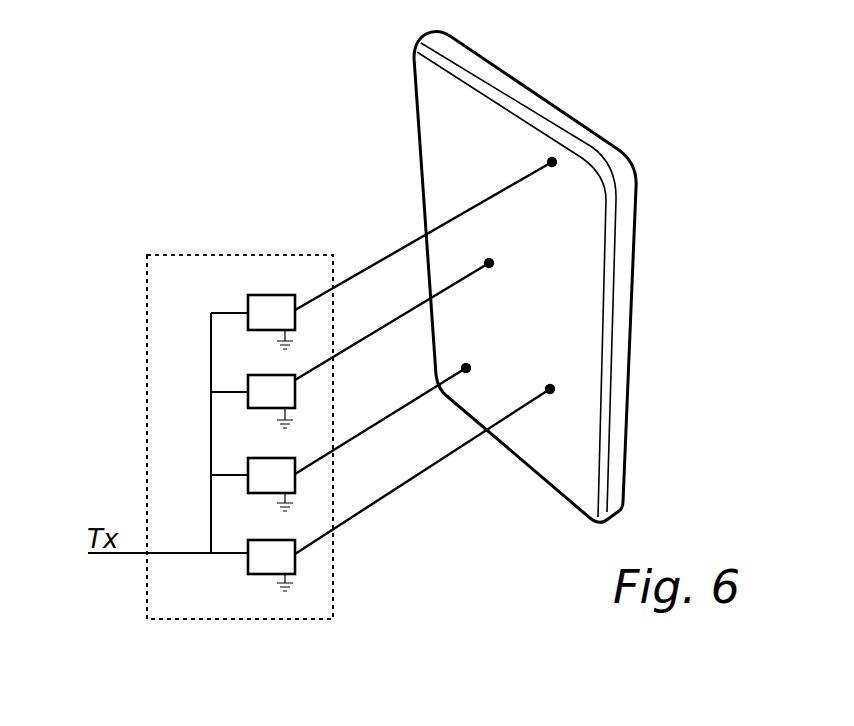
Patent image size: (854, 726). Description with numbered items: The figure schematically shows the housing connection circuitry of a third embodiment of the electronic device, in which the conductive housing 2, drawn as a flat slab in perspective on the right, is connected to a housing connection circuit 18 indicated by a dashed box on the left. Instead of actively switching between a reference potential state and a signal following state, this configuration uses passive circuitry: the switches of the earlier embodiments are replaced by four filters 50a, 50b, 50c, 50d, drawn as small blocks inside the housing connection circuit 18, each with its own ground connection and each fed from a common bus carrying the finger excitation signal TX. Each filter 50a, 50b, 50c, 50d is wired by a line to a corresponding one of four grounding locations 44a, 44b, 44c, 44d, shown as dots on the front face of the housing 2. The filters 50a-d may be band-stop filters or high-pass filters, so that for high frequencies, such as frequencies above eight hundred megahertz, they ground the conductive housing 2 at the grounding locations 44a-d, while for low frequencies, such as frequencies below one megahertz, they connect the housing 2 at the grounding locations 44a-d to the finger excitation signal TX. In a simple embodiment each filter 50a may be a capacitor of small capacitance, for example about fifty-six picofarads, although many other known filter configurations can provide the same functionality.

The housing 2 is at (623, 223).
The housing connection circuit 18 is at (146, 323).
The grounding location 44a is at (554, 161).
The grounding location 44b is at (491, 262).
The grounding location 44c is at (468, 367).
The grounding location 44d is at (550, 388).
The filter 50a is at (263, 297).
The filter 50b is at (248, 377).
The filter 50c is at (248, 460).
The filter 50d is at (265, 571).